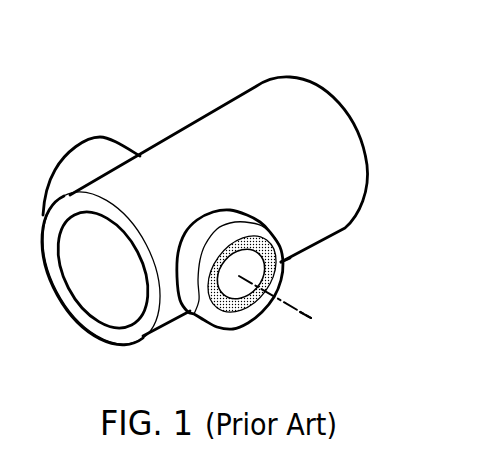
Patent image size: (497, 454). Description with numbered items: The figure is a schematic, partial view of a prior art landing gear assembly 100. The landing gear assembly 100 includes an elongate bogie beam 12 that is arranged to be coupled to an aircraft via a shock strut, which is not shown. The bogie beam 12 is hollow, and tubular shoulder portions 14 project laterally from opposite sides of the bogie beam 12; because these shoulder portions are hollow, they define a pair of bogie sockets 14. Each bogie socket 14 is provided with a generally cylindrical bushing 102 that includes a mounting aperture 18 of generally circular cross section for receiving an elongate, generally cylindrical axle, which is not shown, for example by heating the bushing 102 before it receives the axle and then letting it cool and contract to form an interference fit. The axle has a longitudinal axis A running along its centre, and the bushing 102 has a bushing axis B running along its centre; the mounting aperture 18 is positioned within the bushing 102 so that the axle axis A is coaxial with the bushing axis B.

The landing gear assembly 100 is at (231, 190).
The bogie beam 12 is at (232, 118).
The tubular shoulder portion 14 is at (97, 158).
The mounting aperture 18 is at (229, 292).
The bushing 102 is at (284, 256).
The axle axis A is at (296, 309).
The bushing axis B is at (322, 322).